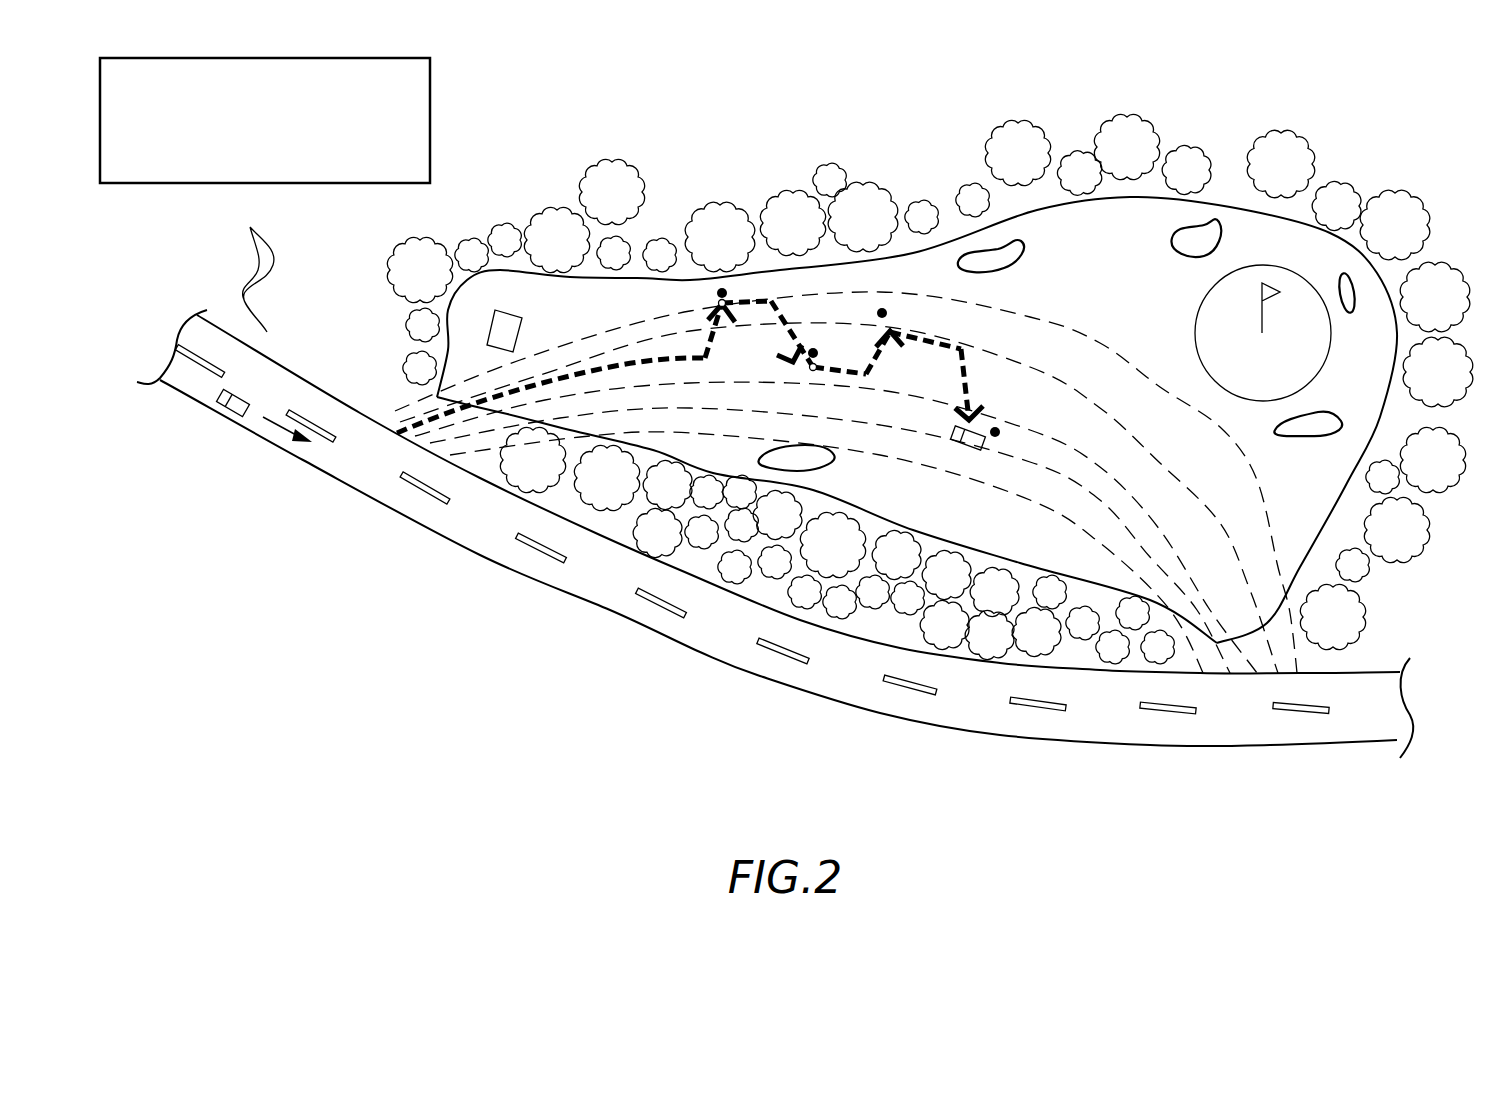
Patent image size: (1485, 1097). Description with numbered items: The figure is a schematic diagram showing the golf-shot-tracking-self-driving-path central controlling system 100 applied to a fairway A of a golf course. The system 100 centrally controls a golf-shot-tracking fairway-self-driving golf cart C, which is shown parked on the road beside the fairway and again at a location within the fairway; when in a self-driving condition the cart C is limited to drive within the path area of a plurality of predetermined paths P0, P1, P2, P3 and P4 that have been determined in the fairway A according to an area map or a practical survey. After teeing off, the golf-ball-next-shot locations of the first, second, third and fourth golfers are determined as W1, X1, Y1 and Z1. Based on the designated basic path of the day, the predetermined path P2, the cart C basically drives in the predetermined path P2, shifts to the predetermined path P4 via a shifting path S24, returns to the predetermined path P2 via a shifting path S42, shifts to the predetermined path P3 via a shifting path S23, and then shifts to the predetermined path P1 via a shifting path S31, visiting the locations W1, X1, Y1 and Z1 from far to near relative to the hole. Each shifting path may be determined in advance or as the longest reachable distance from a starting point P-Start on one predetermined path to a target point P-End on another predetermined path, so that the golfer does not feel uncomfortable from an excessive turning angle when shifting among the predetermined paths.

The golf-shot-tracking-self-driving-path central controlling system 100 is at (266, 58).
The fairway A is at (1219, 205).
The golf-shot-tracking fairway-self-driving golf cart C is at (232, 410).
The predetermined path P0 is at (455, 447).
The predetermined path P1 is at (437, 450).
The predetermined path P2 is at (410, 432).
The predetermined path P3 is at (395, 416).
The predetermined path P4 is at (400, 408).
The golf-ball-next-shot location W1 is at (722, 288).
The golf-ball-next-shot location X1 is at (882, 308).
The golf-ball-next-shot location Y1 is at (813, 348).
The golf-ball-next-shot location Z1 is at (995, 437).
The shifting path S24 is at (690, 346).
The shifting path S42 is at (790, 345).
The shifting path S23 is at (880, 347).
The shifting path S31 is at (975, 385).
The starting point P-Start is at (712, 300).
The target point P-End is at (820, 372).